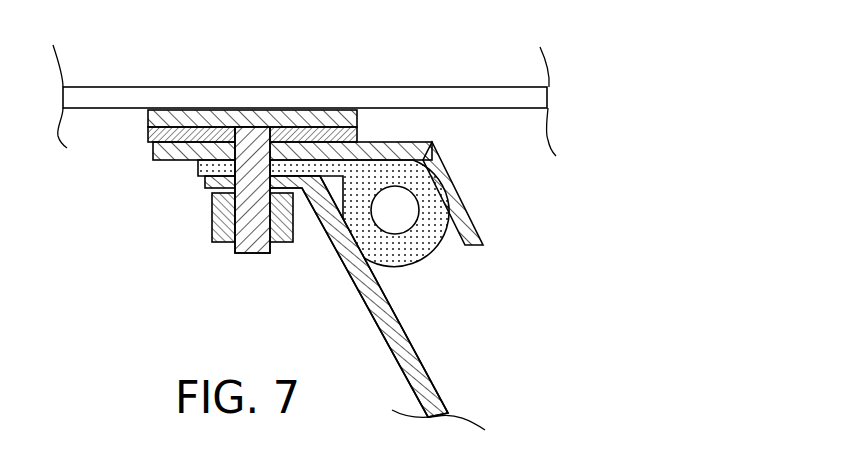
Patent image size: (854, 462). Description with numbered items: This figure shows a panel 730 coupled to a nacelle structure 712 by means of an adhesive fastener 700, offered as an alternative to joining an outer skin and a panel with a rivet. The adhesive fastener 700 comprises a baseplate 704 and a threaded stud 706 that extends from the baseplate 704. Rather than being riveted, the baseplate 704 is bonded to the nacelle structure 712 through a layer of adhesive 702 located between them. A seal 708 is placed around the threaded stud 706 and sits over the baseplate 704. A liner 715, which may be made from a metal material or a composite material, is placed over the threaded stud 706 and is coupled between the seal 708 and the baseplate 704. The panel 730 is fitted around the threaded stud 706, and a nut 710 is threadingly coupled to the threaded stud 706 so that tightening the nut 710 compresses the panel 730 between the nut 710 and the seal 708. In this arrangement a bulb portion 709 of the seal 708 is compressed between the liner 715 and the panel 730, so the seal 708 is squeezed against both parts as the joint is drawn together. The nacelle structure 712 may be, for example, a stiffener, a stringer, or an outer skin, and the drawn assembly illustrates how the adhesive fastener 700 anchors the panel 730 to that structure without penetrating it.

The adhesive fastener 700 is at (138, 218).
The adhesive 702 is at (148, 120).
The baseplate 704 is at (153, 157).
The threaded stud 706 is at (257, 255).
The seal 708 is at (428, 243).
The bulb portion 709 is at (393, 252).
The nut 710 is at (212, 228).
The nacelle structure 712 is at (460, 88).
The liner 715 is at (457, 193).
The panel 730 is at (412, 342).